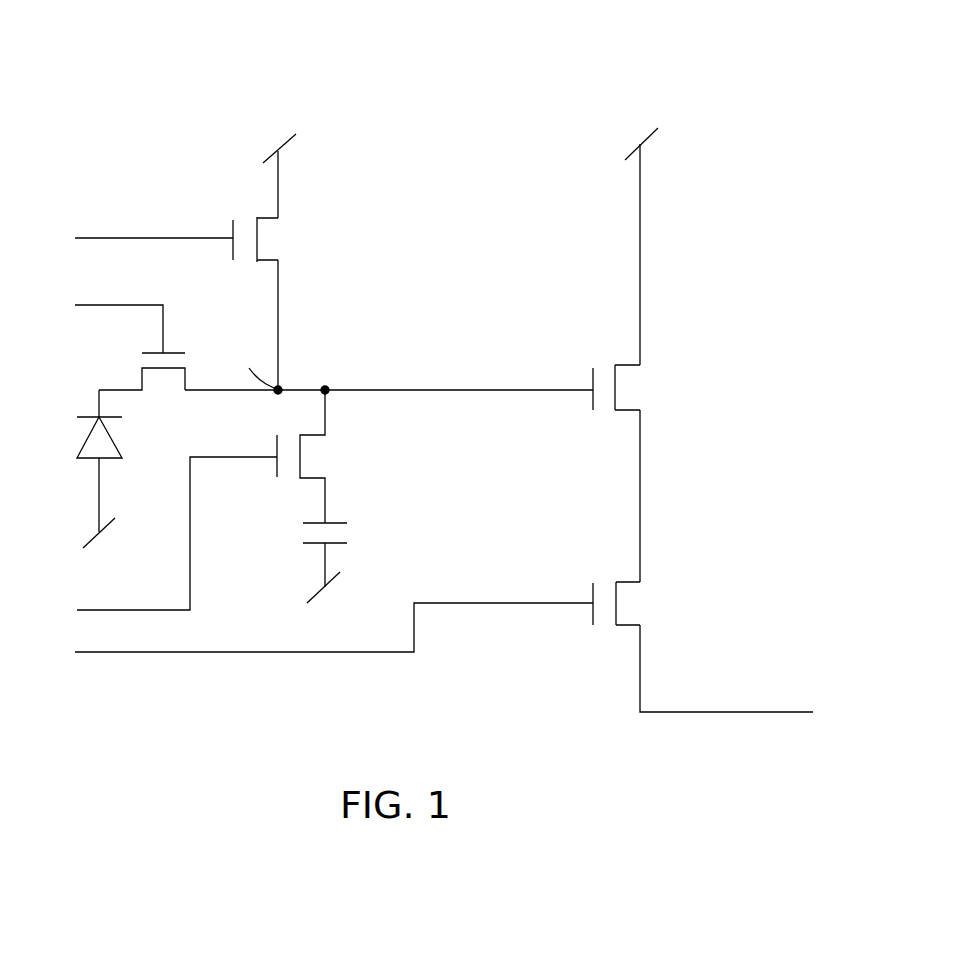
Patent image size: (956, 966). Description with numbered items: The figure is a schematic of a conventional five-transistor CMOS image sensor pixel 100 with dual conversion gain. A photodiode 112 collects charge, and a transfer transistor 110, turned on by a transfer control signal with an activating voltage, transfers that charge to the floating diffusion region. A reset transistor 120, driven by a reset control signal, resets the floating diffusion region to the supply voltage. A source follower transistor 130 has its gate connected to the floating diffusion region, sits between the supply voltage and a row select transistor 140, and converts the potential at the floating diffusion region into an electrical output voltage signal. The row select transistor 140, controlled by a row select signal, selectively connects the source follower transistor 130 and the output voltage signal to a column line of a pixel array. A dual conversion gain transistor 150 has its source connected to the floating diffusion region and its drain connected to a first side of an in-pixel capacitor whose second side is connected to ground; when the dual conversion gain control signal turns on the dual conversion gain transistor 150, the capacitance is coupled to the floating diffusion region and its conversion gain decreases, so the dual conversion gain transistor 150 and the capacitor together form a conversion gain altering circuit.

The CMOS image sensor pixel 100 is at (572, 119).
The transfer transistor 110 is at (143, 370).
The photodiode 112 is at (112, 447).
The reset transistor 120 is at (268, 262).
The source follower transistor 130 is at (628, 410).
The row select transistor 140 is at (628, 625).
The dual conversion gain transistor 150 is at (312, 478).